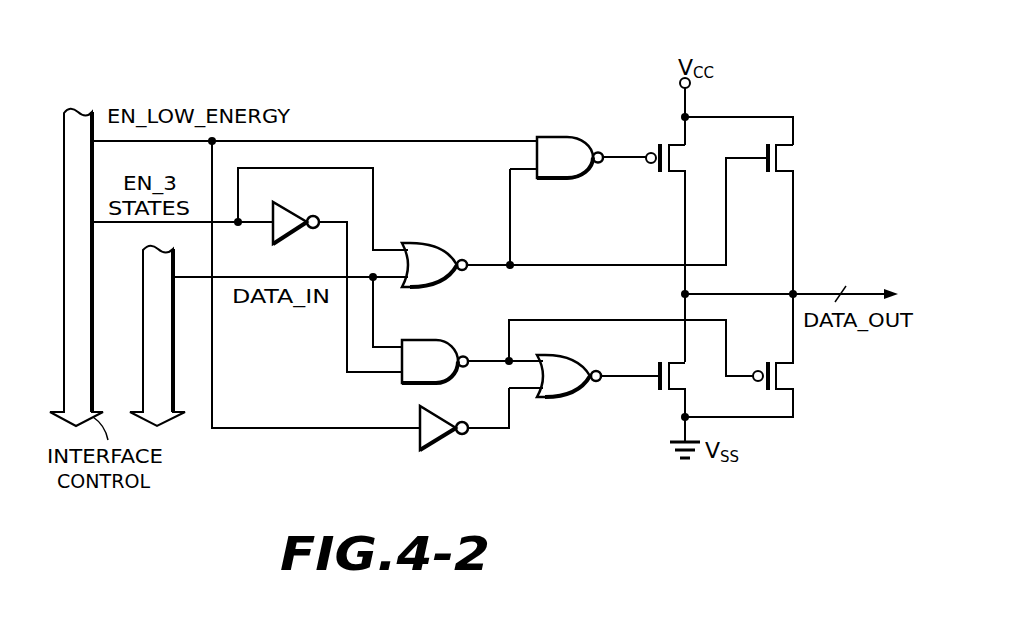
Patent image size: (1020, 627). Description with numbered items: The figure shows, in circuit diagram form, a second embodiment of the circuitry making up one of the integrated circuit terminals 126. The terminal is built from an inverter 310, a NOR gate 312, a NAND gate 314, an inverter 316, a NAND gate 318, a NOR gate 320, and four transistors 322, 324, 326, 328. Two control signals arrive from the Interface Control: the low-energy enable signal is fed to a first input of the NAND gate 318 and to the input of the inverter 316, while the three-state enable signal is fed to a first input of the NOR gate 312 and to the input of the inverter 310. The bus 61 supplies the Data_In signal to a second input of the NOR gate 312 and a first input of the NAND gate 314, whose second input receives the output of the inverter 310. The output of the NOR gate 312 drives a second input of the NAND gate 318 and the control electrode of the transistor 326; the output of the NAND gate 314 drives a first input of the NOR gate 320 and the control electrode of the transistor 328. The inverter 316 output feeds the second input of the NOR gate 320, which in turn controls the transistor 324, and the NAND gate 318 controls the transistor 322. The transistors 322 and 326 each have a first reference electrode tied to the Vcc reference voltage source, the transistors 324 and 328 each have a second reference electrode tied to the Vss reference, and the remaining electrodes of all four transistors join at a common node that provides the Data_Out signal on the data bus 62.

The bus 61 is at (174, 416).
The data bus 62 is at (862, 291).
The integrated circuit terminal 126 is at (818, 40).
The inverter 310 is at (287, 214).
The NOR gate 312 is at (418, 243).
The NAND gate 314 is at (418, 340).
The inverter 316 is at (445, 440).
The NAND gate 318 is at (553, 137).
The NOR gate 320 is at (572, 397).
The transistor 322 is at (663, 175).
The transistor 324 is at (660, 362).
The transistor 326 is at (768, 175).
The transistor 328 is at (768, 358).